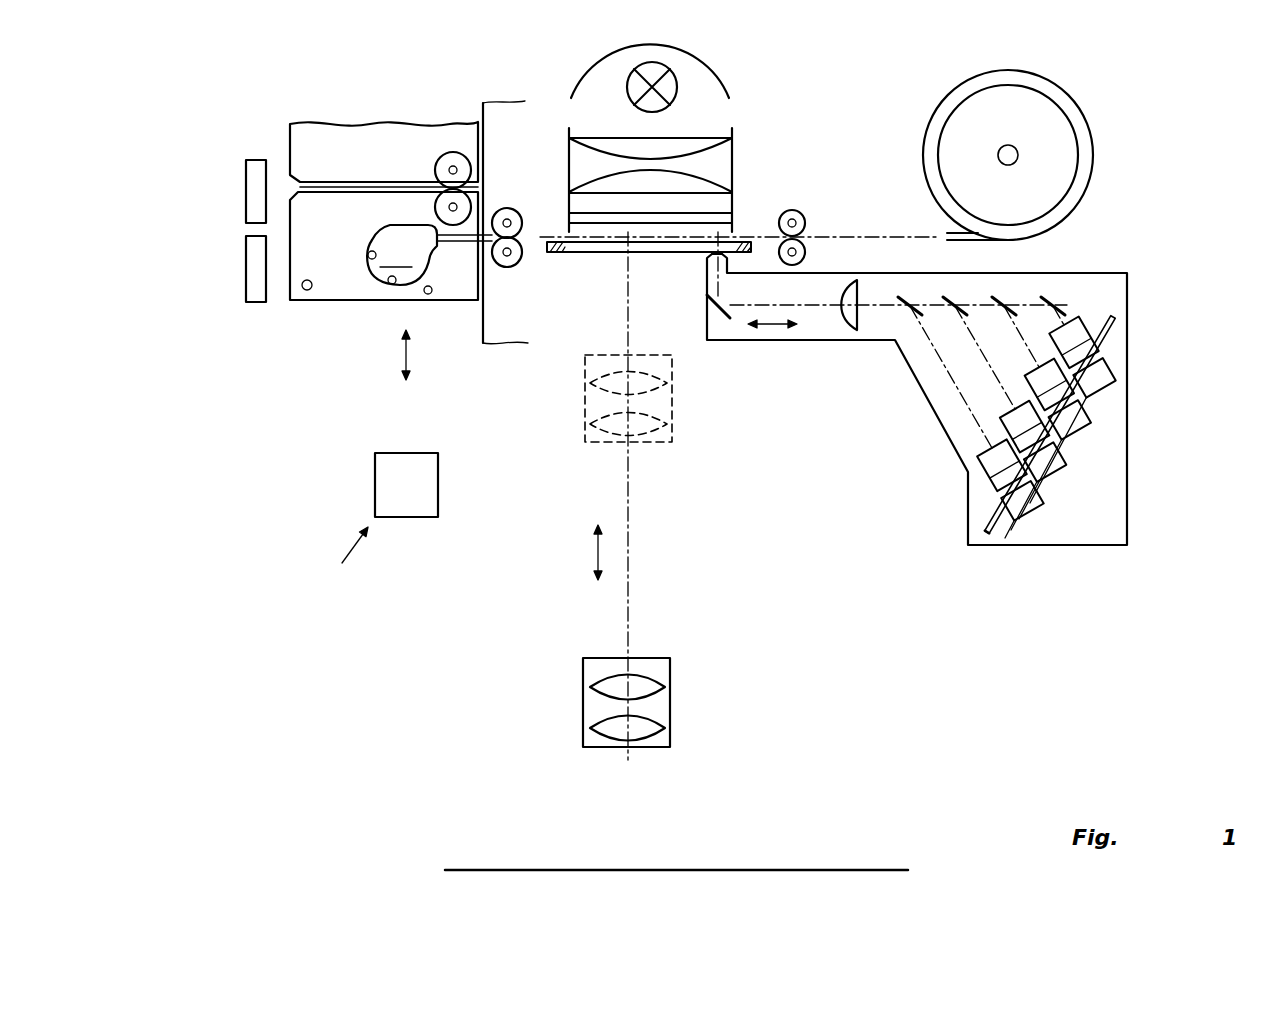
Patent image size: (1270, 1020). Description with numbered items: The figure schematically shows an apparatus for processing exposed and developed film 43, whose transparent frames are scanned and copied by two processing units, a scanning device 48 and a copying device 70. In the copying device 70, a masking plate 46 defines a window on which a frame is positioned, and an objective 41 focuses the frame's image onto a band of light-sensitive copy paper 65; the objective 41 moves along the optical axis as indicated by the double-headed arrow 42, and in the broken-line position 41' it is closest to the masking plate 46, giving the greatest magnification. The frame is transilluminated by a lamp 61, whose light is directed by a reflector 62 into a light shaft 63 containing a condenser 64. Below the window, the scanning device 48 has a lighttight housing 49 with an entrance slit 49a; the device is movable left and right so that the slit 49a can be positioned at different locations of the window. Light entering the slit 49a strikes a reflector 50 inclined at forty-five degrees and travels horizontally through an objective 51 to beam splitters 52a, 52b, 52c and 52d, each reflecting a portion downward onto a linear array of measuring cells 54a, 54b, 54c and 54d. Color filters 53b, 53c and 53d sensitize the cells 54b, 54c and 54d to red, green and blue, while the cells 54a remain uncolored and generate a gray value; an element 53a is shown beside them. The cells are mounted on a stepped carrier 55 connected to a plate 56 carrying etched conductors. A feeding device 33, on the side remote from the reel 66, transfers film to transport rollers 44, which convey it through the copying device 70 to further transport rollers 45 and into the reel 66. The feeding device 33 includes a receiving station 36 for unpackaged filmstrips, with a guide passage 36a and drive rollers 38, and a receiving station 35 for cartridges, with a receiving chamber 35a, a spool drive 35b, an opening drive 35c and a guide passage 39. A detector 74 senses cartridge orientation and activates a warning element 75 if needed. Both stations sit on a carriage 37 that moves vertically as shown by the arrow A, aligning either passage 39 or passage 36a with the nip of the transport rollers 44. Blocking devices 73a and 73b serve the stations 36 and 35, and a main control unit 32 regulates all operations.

The main control unit 32 is at (421, 502).
The feeding device 33 is at (483, 95).
The receiving station for packaged films 35 is at (356, 262).
The receiving chamber 35a is at (400, 254).
The spool drive 35b is at (372, 250).
The cartridge opening drive 35c is at (429, 295).
The receiving station for unpackaged filmstrips 36 is at (370, 102).
The guide passage 36a is at (347, 187).
The carriage 37 is at (342, 229).
The drive rollers 38 is at (436, 175).
The guide passage 39 is at (460, 243).
The objective 41 is at (590, 702).
The objective position 41' is at (595, 398).
The double-headed arrow 42 is at (596, 553).
The film 43 is at (852, 236).
The transport rollers 44 is at (508, 207).
The transport rollers 45 is at (796, 208).
The masking plate 46 is at (581, 253).
The scanning device 48 is at (896, 414).
The lighttight housing 49 is at (790, 342).
The entrance slit 49a is at (706, 262).
The reflector 50 is at (719, 321).
The objective 51 is at (848, 331).
The beam splitter 52a is at (905, 296).
The beam splitter 52b is at (950, 296).
The beam splitter 52c is at (1000, 296).
The beam splitter 52d is at (1048, 294).
The interference filter 53a is at (980, 462).
The color filter 53b is at (1035, 450).
The color filter 53c is at (1060, 405).
The color filter 53d is at (1062, 325).
The measuring cells 54a is at (1026, 512).
The measuring cells 54b is at (1040, 480).
The measuring cells 54c is at (1065, 436).
The measuring cells 54d is at (1095, 378).
The stepped carrier 55 is at (988, 503).
The plate 56 is at (987, 536).
The lamp 61 is at (676, 95).
The reflector 62 is at (713, 62).
The light shaft 63 is at (735, 160).
The condenser 64 is at (582, 150).
The copy paper 65 is at (727, 868).
The reel 66 is at (1040, 68).
The copying device 70 is at (695, 134).
The blocking device 73a is at (253, 160).
The blocking device 73b is at (256, 302).
The detector 74 is at (388, 285).
The warning element 75 is at (307, 291).
The double-headed arrow A is at (400, 356).